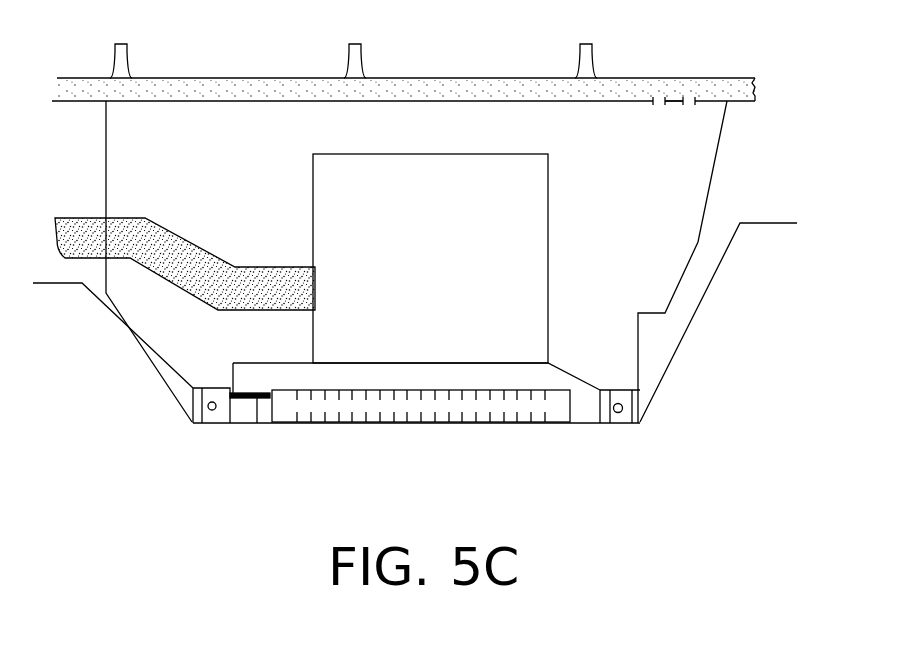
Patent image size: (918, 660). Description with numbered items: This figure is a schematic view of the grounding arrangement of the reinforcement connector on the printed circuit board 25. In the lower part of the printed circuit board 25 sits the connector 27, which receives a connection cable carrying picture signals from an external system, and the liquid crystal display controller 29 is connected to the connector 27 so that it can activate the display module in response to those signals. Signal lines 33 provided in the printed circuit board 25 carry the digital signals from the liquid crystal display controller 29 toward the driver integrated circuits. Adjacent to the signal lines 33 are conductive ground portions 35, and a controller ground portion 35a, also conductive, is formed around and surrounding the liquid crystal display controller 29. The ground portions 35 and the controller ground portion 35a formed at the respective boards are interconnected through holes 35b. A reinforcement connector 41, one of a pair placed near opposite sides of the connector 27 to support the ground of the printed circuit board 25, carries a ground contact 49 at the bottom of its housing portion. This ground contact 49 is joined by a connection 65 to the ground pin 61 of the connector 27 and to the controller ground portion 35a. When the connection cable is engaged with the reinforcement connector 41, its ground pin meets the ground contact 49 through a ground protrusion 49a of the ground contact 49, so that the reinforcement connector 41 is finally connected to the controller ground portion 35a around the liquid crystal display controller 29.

The printed circuit board 25 is at (763, 167).
The connector 27 is at (462, 422).
The liquid crystal display controller 29 is at (548, 212).
The signal lines 33 is at (68, 218).
The ground portions 35 is at (487, 80).
The controller ground portion 35a is at (207, 110).
The holes 35b is at (690, 100).
The reinforcement connector 41 is at (193, 412).
The ground contact 49 is at (193, 423).
The ground protrusion 49a is at (212, 411).
The ground pin 61 is at (280, 421).
The connection 65 is at (260, 421).